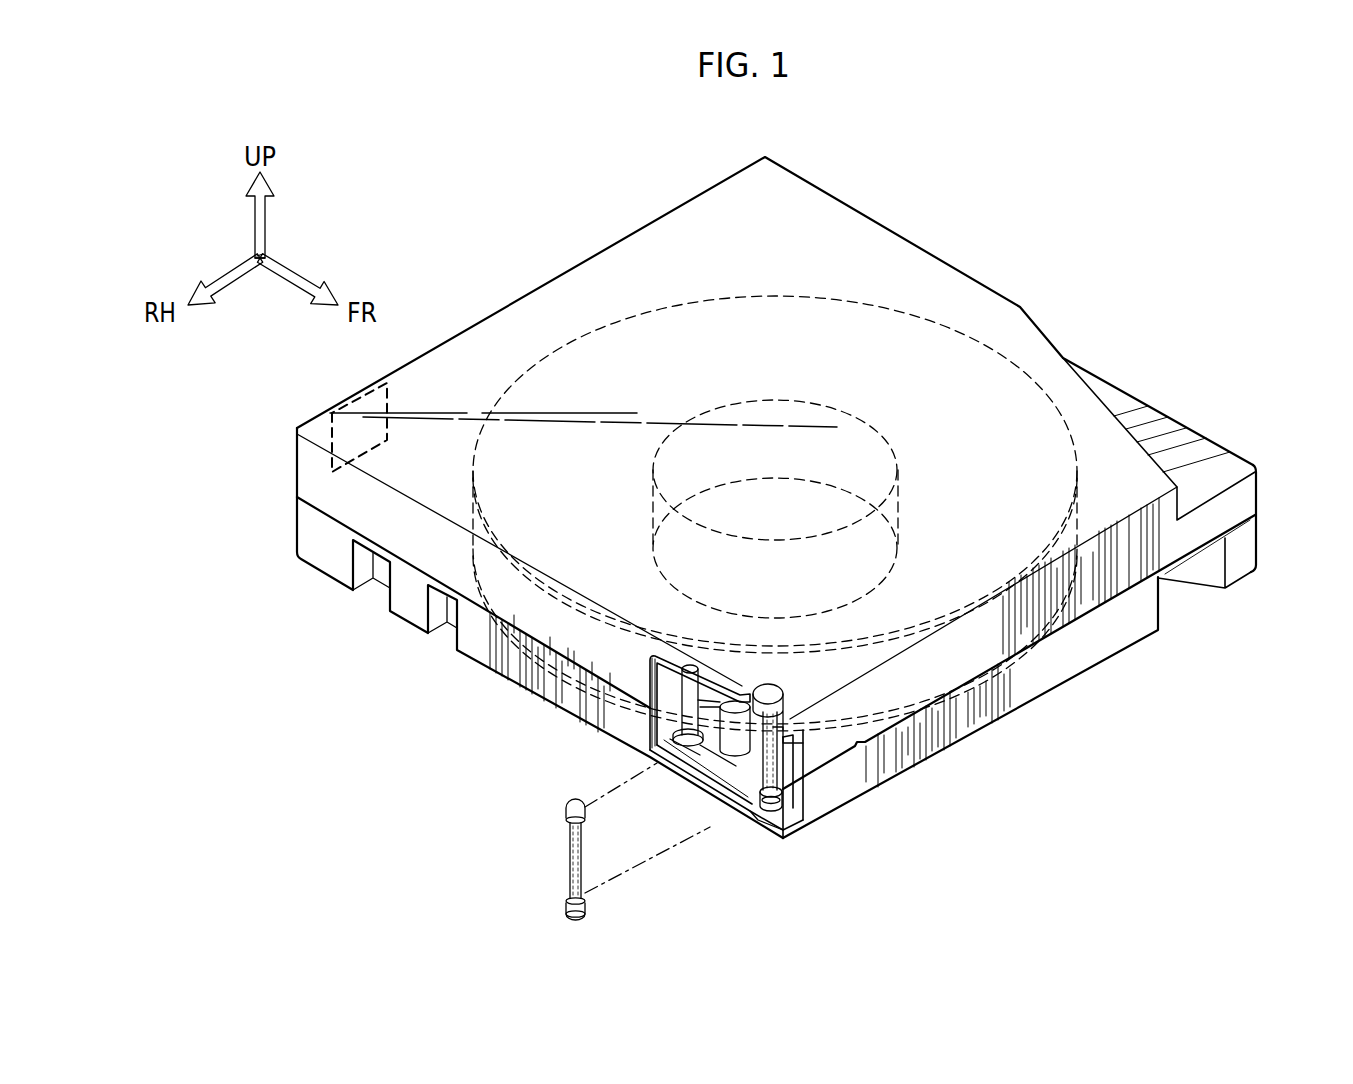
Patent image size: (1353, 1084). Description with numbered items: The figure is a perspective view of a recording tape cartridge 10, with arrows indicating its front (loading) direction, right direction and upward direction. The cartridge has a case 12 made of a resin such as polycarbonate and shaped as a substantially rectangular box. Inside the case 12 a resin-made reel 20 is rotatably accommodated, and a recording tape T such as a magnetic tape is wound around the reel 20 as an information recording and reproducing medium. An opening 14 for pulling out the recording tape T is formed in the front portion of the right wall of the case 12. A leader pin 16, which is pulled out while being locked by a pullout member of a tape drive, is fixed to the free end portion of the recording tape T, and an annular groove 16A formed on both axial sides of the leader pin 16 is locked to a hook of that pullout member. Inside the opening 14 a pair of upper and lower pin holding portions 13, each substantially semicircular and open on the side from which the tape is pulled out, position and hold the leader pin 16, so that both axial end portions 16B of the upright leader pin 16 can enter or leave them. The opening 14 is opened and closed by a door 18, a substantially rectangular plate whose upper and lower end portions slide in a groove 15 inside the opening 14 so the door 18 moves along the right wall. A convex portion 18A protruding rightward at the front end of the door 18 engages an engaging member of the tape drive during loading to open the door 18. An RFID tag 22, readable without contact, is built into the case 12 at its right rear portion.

The recording tape cartridge 10 is at (956, 227).
The case 12 is at (632, 268).
The pin holding portion 13 is at (758, 686).
The opening 14 is at (737, 772).
The groove 15 is at (700, 758).
The leader pin 16 is at (570, 832).
The annular groove 16A is at (566, 817).
The axial end portion 16B is at (574, 799).
The door 18 is at (647, 736).
The convex portion 18A is at (648, 676).
The reel 20 is at (788, 296).
The RFID tag 22 is at (331, 433).
The recording tape T is at (651, 874).